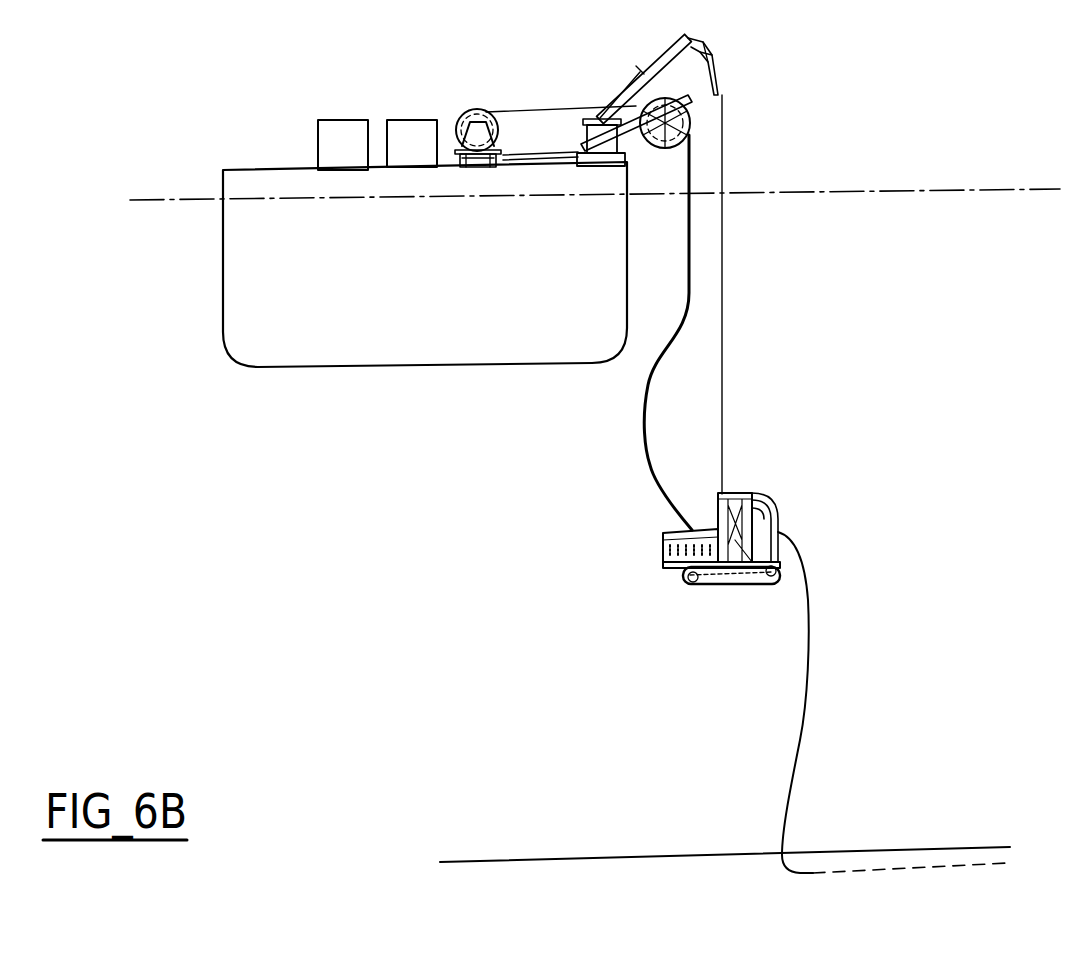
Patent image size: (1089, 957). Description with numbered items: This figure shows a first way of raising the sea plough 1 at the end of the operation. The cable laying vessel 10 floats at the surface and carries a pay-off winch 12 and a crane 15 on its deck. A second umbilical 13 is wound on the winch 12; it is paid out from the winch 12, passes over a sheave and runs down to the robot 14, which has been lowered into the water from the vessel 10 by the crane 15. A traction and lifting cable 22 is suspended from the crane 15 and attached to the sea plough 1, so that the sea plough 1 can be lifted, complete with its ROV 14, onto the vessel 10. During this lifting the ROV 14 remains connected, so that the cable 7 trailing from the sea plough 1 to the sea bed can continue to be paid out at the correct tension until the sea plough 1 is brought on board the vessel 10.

The sea plough 1 is at (727, 519).
The cable 7 is at (808, 657).
The cable laying vessel 10 is at (388, 340).
The pay-off winch 12 is at (476, 110).
The second umbilical 13 is at (640, 411).
The robot 14 is at (670, 536).
The crane 15 is at (655, 65).
The traction and lifting cable 22 is at (722, 285).